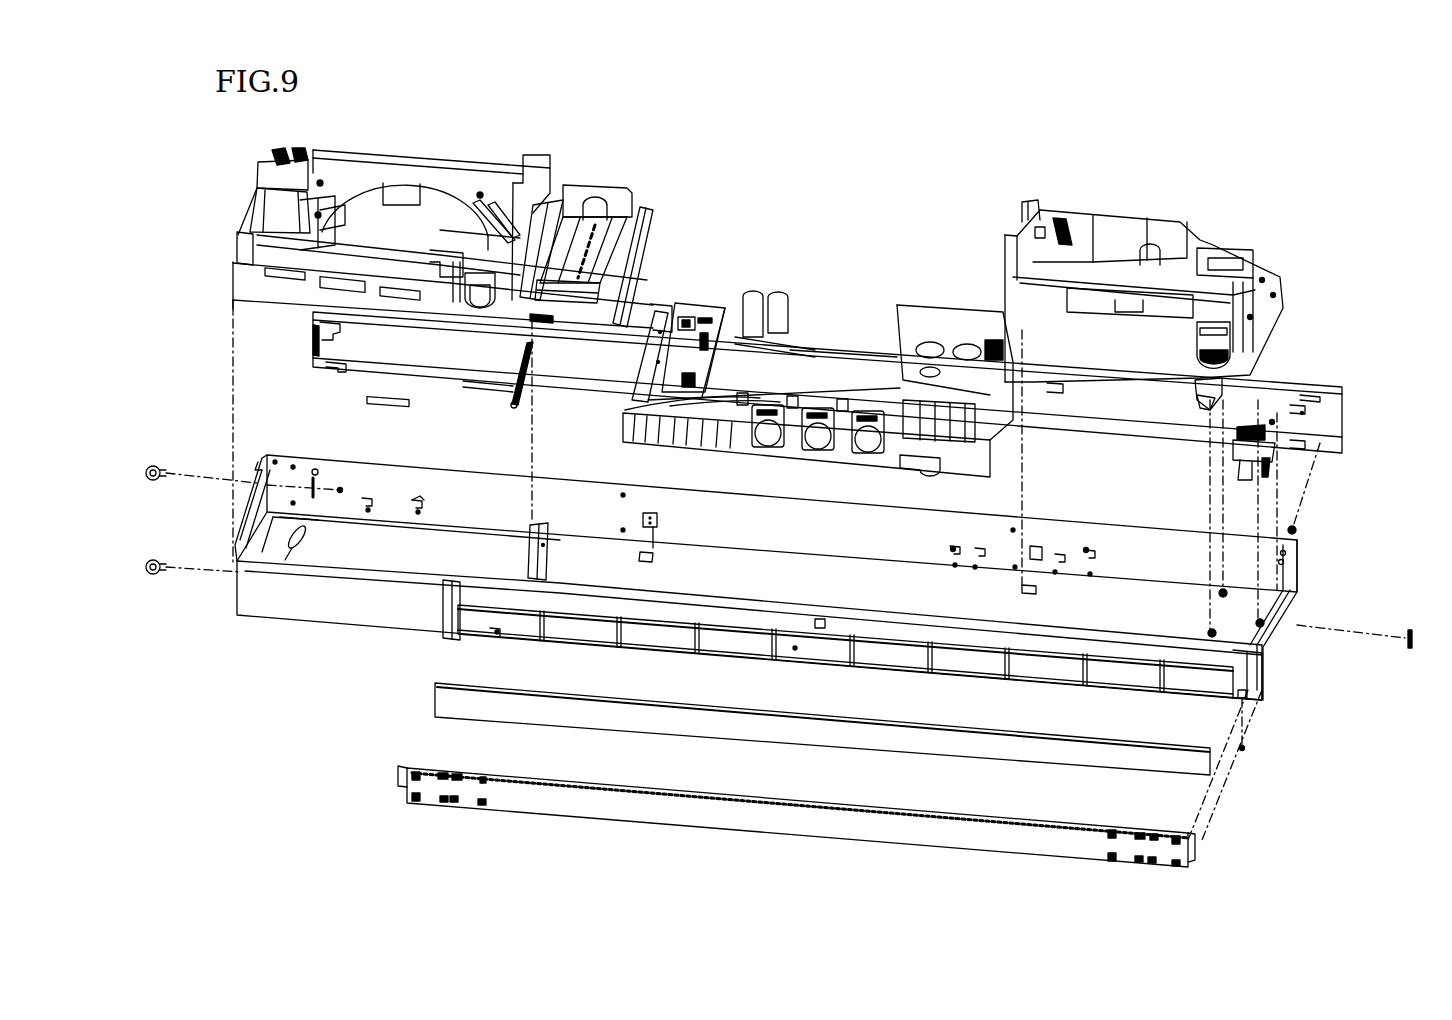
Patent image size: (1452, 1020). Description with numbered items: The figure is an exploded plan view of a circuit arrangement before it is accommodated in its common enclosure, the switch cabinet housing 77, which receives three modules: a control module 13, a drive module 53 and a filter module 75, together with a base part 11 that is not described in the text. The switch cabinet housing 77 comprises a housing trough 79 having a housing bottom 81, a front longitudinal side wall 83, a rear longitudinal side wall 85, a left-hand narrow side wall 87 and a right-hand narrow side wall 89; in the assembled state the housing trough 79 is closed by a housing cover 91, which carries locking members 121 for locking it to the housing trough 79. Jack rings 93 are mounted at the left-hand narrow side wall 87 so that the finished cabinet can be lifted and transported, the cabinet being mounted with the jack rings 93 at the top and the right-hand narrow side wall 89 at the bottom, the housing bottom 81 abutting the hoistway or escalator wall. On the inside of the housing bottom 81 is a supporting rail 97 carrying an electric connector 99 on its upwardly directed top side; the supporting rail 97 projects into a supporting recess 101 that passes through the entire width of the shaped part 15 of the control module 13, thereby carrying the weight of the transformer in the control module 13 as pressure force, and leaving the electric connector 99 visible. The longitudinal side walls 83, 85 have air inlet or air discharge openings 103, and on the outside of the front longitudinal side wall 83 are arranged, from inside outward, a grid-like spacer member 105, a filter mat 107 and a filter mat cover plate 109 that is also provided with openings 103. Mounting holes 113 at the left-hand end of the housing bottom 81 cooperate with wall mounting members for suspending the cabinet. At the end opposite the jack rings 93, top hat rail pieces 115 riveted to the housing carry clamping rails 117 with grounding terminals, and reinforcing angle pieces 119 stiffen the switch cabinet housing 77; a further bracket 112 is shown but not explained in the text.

The chassis base frame 11 is at (262, 270).
The control module 13 is at (407, 146).
The shaped part 15 is at (470, 190).
The drive module 53 is at (838, 328).
The filter module 75 is at (1137, 208).
The switch cabinet housing 77 is at (412, 634).
The housing trough 79 is at (770, 515).
The housing bottom 81 is at (410, 557).
The front longitudinal side wall 83 is at (318, 608).
The rear longitudinal side wall 85 is at (384, 482).
The left-hand narrow side wall 87 is at (240, 540).
The right-hand narrow side wall 89 is at (1297, 588).
The housing cover 91 is at (1323, 390).
The jack rings 93 is at (152, 478).
The supporting rail 97 is at (548, 553).
The electric connector 99 is at (512, 398).
The supporting recess 101 is at (573, 168).
The air inlet or air discharge openings 103 is at (420, 498).
The grid-like spacer member 105 is at (1183, 697).
The filter mat 107 is at (1203, 773).
The filter mat cover plate 109 is at (1180, 850).
The bracket 112 is at (330, 328).
The mounting holes 113 is at (290, 540).
The top hat rail pieces 115 is at (1262, 420).
The clamping rails 117 is at (1225, 393).
The reinforcing angle pieces 119 is at (660, 535).
The locking members 121 is at (337, 375).